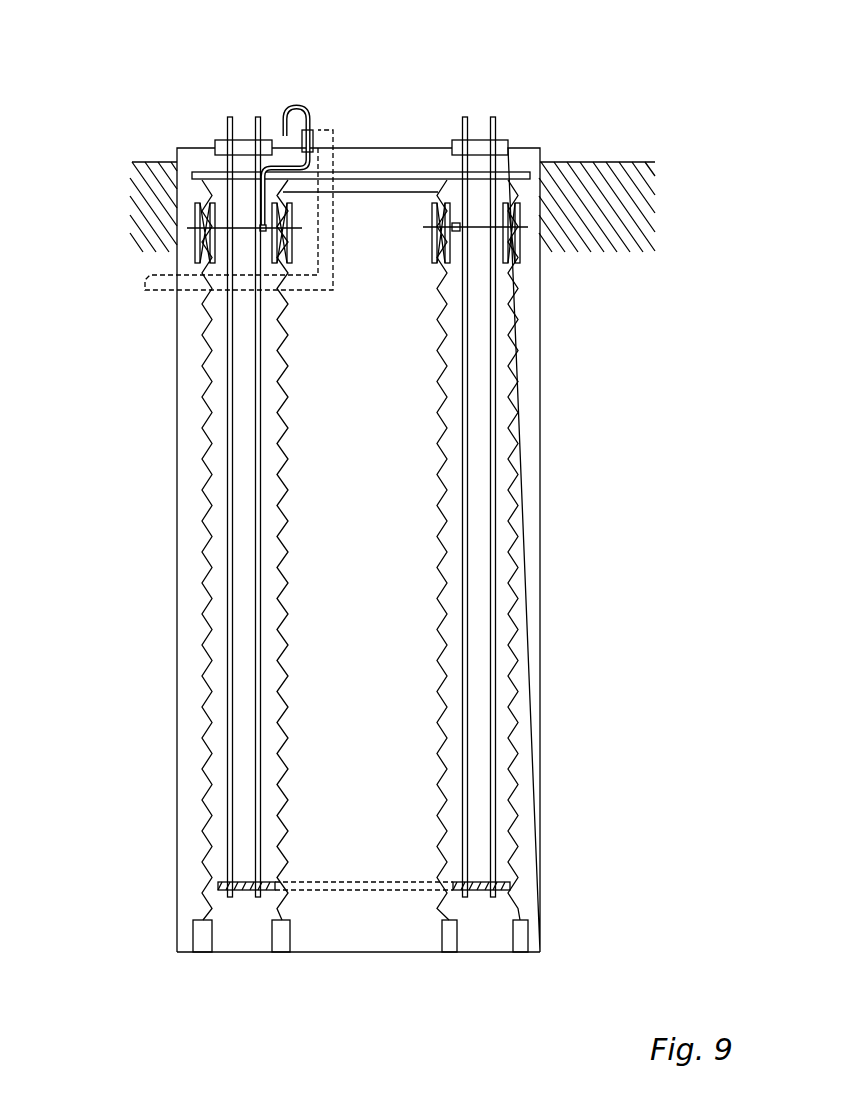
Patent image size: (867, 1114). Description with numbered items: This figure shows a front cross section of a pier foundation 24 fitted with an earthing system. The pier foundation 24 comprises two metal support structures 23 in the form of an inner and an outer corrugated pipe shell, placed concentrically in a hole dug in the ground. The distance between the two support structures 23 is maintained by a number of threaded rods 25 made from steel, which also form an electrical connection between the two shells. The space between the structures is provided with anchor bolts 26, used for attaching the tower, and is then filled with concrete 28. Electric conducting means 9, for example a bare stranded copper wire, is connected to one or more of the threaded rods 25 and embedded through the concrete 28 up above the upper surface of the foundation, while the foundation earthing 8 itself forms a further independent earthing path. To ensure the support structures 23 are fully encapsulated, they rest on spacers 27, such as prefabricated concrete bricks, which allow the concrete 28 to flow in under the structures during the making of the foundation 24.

The pier foundation 24 is at (197, 132).
The electric conducting means 9 is at (288, 107).
The anchor bolts 26 is at (495, 128).
The threaded rods 25 is at (193, 233).
The foundation earthing 8 is at (278, 322).
The concrete 28 is at (483, 353).
The metal support structures 23 is at (443, 502).
The spacers 27 is at (453, 927).